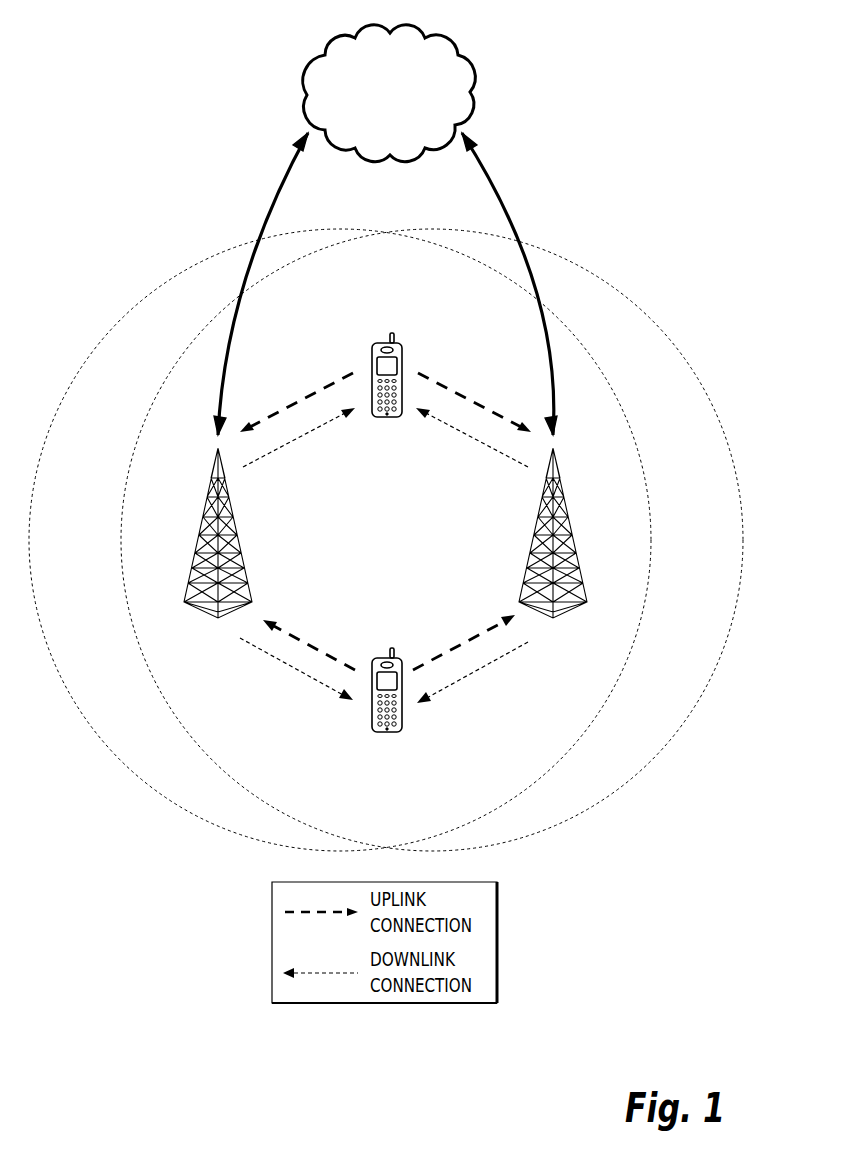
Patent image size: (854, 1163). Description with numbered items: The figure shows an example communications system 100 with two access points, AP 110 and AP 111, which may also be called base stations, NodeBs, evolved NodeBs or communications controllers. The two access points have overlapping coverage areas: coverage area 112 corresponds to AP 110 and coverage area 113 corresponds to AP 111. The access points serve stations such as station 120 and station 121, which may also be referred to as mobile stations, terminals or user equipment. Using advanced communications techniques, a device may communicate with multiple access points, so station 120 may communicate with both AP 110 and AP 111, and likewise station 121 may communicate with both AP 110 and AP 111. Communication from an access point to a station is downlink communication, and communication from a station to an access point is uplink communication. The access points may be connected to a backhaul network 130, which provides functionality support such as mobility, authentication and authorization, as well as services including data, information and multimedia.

The communications system 100 is at (147, 95).
The access point 110 is at (197, 530).
The access point 111 is at (575, 530).
The coverage area 112 is at (340, 540).
The coverage area 113 is at (432, 540).
The station 120 is at (371, 352).
The station 121 is at (403, 717).
The backhaul network 130 is at (440, 40).